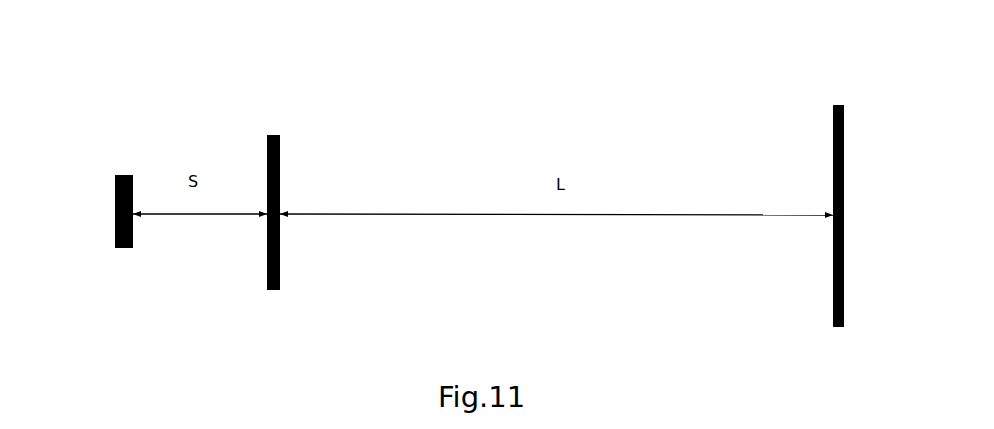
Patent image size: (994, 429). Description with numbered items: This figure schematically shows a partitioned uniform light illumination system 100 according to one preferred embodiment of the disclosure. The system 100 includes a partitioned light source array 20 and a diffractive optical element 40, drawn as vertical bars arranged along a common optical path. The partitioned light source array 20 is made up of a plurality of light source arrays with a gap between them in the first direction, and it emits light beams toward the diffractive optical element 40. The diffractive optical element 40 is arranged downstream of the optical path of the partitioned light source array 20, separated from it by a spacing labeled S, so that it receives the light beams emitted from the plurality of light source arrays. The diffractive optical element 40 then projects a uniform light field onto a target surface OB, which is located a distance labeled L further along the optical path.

The partitioned uniform light illumination system 100 is at (204, 76).
The partitioned light source array 20 is at (121, 173).
The diffractive optical element 40 is at (276, 126).
The target surface OB is at (852, 137).